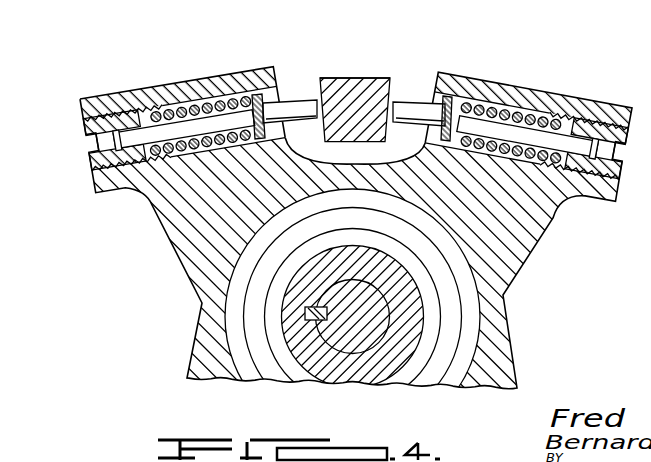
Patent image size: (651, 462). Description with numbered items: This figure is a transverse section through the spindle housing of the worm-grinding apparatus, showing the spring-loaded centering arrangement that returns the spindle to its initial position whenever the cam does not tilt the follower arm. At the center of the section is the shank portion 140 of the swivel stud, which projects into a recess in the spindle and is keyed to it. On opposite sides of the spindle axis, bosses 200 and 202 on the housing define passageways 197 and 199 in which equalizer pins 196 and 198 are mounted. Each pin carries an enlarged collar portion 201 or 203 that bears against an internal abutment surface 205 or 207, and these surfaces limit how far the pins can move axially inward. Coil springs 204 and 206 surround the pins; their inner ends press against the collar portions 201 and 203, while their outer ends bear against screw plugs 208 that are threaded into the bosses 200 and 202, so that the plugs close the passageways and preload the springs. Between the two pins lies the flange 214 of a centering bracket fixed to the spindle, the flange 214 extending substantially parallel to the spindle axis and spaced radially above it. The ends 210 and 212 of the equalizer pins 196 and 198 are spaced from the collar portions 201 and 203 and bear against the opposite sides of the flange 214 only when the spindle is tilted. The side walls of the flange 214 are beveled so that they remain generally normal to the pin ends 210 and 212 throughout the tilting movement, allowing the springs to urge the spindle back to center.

The shank portion 140 is at (327, 314).
The equalizer pin 196 is at (188, 103).
The passageway 197 is at (175, 128).
The equalizer pin 198 is at (502, 125).
The passageway 199 is at (533, 117).
The boss 200 is at (113, 95).
The collar portion 201 is at (262, 96).
The boss 202 is at (478, 79).
The collar portion 203 is at (452, 98).
The coil spring 204 is at (230, 94).
The internal abutment surface 205 is at (287, 143).
The coil spring 206 is at (577, 100).
The internal abutment surface 207 is at (423, 146).
The screw plug 208 is at (82, 131).
The end of equalizer pin 210 is at (303, 104).
The end of equalizer pin 212 is at (393, 90).
The flange 214 is at (352, 77).